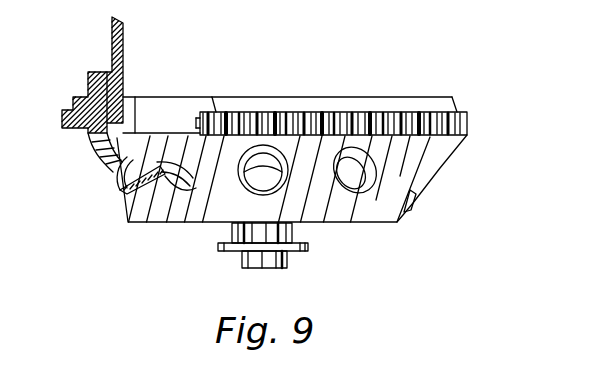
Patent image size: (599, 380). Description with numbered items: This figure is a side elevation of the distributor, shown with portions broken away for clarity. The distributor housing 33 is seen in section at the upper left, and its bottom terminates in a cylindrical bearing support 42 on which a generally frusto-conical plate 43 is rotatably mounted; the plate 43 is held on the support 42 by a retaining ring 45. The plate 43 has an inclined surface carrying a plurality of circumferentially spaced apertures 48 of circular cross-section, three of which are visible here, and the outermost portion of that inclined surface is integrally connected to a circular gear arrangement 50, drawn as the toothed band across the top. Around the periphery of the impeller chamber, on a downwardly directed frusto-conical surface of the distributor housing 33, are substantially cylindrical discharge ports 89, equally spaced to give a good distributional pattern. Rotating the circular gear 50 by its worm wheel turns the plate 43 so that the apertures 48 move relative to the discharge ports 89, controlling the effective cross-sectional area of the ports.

The distributor housing 33 is at (110, 54).
The circular gear arrangement 50 is at (465, 111).
The discharge ports 89 is at (122, 157).
The apertures 48 is at (120, 173).
The frusto-conical plate 43 is at (332, 215).
The retaining ring 45 is at (218, 248).
The cylindrical bearing support 42 is at (242, 262).